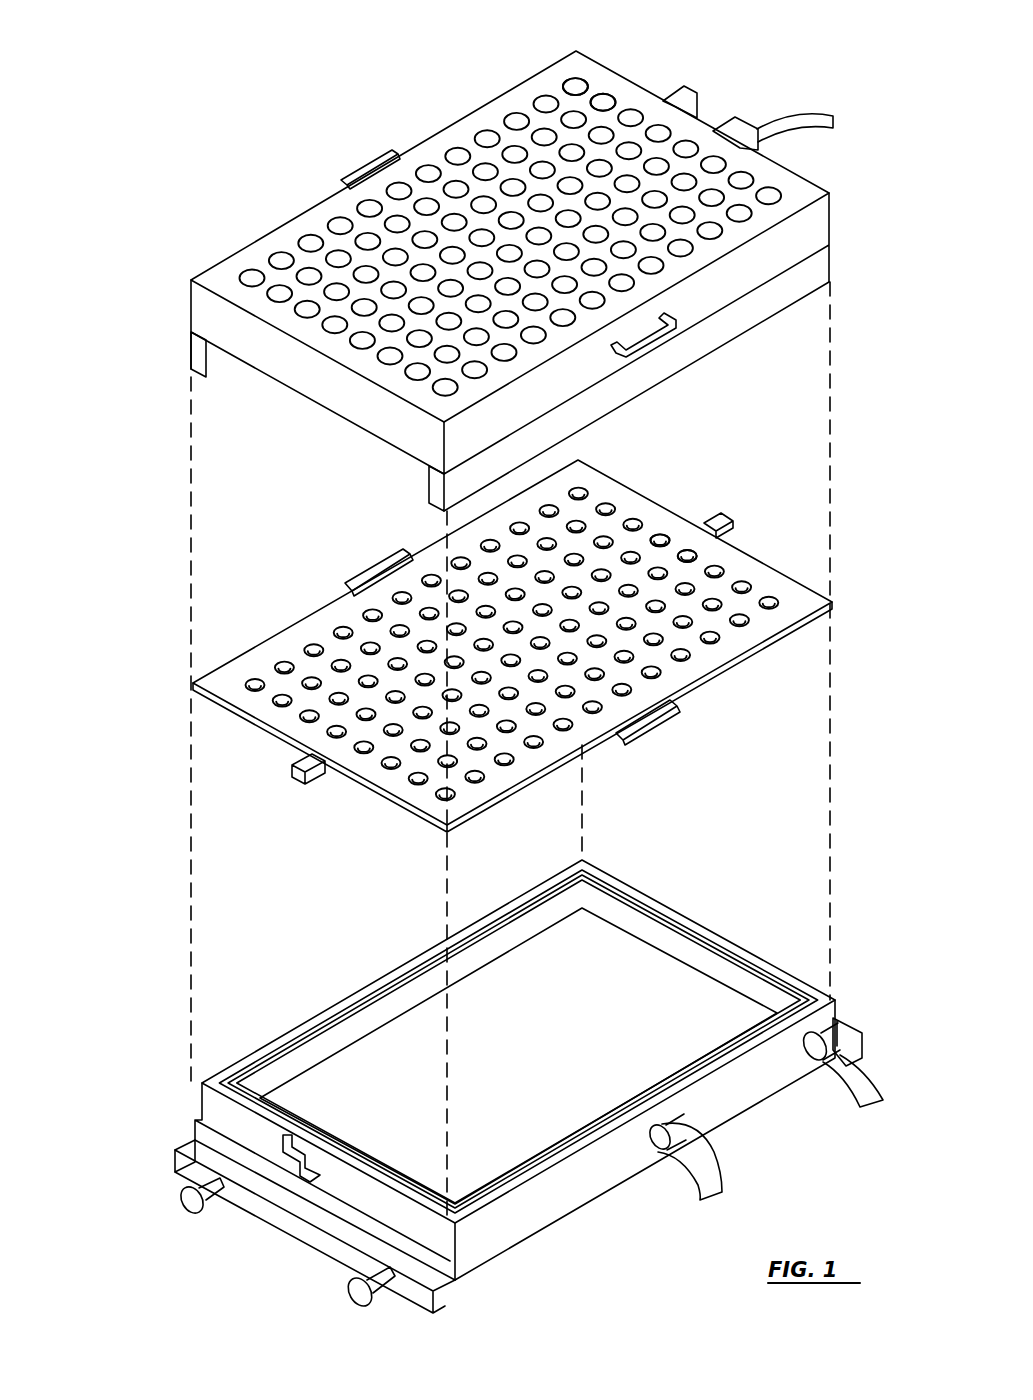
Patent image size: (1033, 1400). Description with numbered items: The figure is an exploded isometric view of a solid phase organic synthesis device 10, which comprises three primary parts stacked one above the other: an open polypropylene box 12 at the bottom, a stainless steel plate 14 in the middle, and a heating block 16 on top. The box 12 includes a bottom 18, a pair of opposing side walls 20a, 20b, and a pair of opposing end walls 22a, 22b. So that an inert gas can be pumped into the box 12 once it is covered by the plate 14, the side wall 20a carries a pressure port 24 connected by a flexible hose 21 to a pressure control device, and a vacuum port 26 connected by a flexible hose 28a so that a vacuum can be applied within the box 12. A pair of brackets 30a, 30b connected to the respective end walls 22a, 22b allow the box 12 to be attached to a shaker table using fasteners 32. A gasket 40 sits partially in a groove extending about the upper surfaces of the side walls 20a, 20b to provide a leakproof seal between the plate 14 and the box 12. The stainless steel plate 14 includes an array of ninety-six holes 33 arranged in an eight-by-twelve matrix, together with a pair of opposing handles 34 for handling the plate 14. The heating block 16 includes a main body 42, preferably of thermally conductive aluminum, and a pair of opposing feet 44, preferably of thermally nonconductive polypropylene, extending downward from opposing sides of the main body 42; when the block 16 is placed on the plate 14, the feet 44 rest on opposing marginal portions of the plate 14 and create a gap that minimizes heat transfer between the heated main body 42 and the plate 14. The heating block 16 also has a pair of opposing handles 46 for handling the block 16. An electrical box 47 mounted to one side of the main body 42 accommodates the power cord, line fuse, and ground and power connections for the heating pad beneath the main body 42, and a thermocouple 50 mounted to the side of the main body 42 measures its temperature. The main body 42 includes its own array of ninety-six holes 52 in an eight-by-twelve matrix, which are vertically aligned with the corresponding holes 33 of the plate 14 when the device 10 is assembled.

The solid phase organic synthesis device 10 is at (160, 178).
The open polypropylene box 12 is at (172, 1092).
The stainless steel plate 14 is at (176, 690).
The heating block 16 is at (152, 312).
The bottom 18 is at (542, 1055).
The side wall 20a is at (588, 1183).
The side wall 20b is at (382, 1003).
The flexible hose 21 is at (867, 1090).
The end wall 22a is at (365, 1193).
The end wall 22b is at (653, 928).
The pressure port 24 is at (835, 1015).
The vacuum port 26 is at (695, 1118).
The flexible hose 28a is at (703, 1173).
The bracket 30a is at (248, 1203).
The bracket 30b is at (865, 1038).
The fasteners 32 is at (352, 1302).
The holes 33 is at (688, 550).
The handles 34 is at (358, 568).
The gasket 40 is at (287, 1040).
The main body 42 is at (485, 118).
The feet 44 is at (214, 370).
The handles 46 is at (383, 155).
The electrical box 47 is at (730, 125).
The thermocouple 50 is at (683, 97).
The holes 52 is at (603, 93).